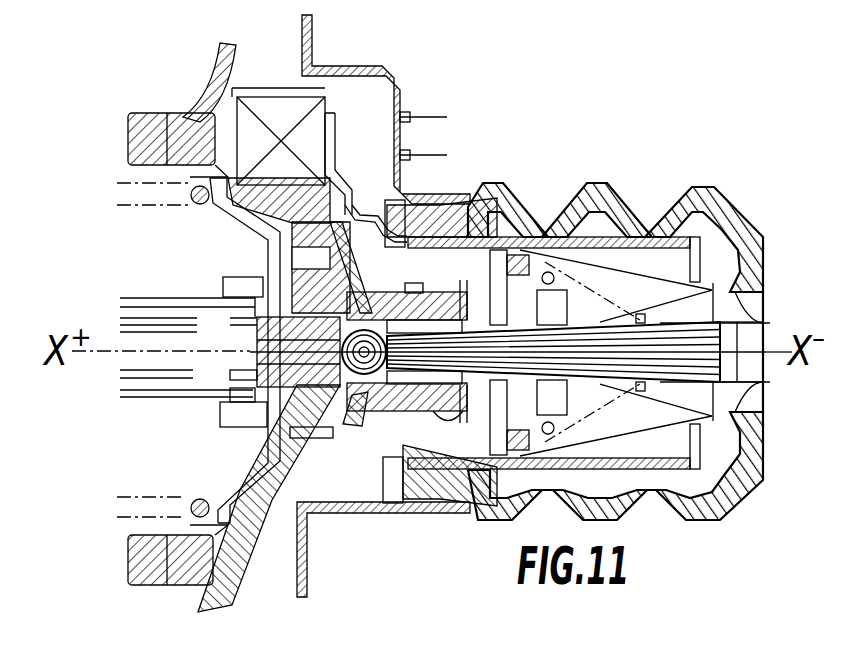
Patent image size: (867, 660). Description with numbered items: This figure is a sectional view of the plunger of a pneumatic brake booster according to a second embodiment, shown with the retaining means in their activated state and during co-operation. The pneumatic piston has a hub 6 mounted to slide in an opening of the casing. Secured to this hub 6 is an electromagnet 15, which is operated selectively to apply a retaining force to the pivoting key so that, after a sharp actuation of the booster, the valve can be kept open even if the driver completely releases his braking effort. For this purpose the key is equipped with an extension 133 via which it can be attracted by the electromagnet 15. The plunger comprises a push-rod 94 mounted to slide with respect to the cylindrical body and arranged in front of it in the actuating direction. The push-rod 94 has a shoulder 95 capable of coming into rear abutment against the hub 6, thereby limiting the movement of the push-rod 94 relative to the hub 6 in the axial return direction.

The hub 6 is at (297, 398).
The electromagnet 15 is at (288, 118).
The push-rod 94 is at (262, 404).
The shoulder 95 is at (227, 285).
The extension 133 is at (330, 128).